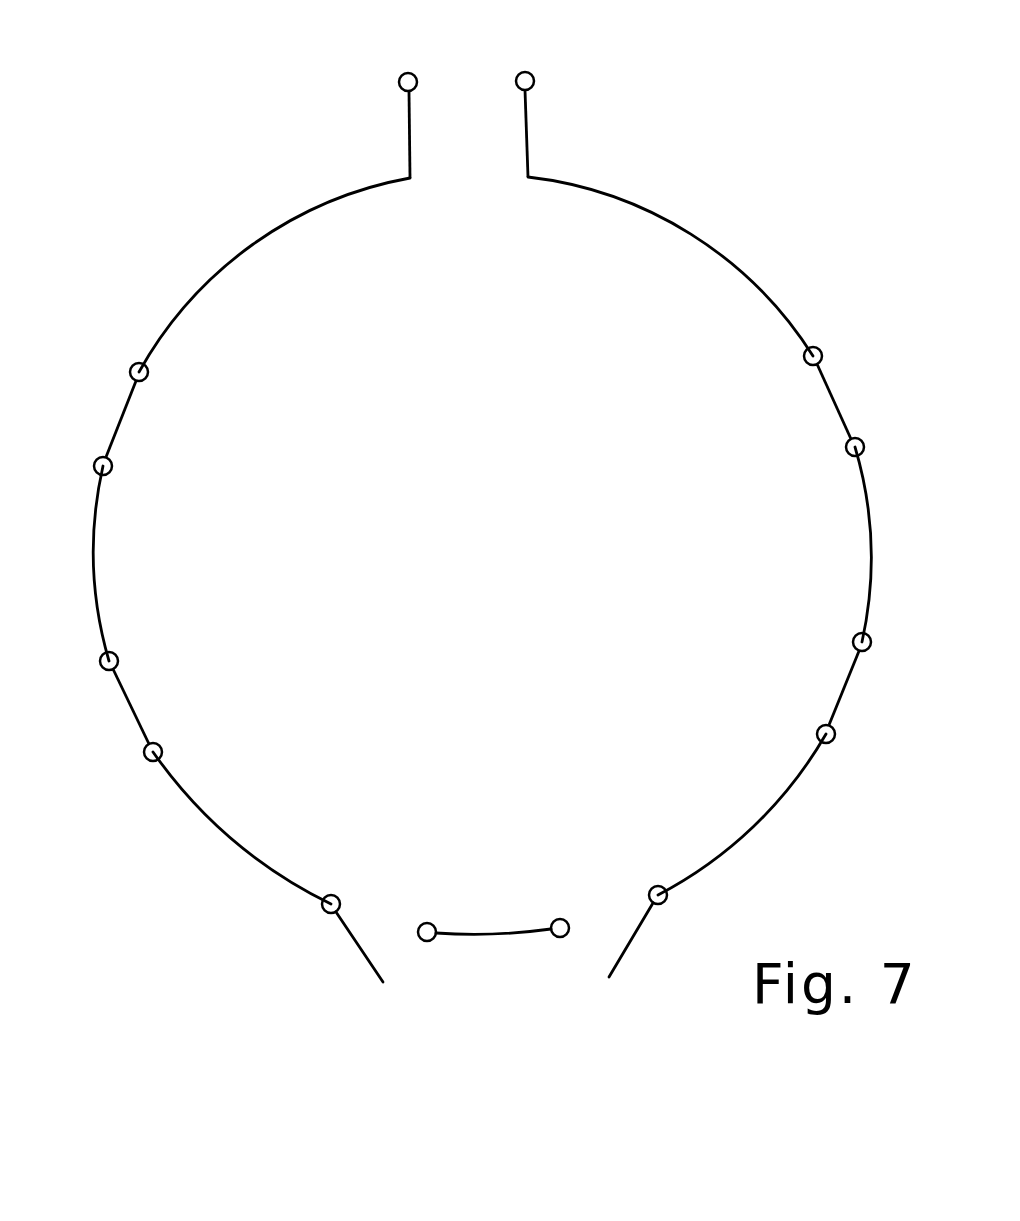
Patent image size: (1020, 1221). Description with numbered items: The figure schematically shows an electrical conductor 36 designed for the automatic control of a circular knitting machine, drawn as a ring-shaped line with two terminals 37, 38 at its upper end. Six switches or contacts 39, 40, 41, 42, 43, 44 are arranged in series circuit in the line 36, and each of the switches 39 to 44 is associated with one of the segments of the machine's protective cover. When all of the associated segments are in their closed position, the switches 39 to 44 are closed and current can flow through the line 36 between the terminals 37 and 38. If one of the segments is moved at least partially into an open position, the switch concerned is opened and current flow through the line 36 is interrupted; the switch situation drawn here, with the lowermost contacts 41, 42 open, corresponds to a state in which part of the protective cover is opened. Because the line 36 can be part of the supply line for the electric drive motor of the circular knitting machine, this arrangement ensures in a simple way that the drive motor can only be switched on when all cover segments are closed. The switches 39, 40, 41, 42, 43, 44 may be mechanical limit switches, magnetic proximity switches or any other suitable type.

The electrical conductor 36 is at (678, 223).
The terminal 37 is at (405, 74).
The terminal 38 is at (528, 73).
The switch 39 is at (835, 398).
The switch 40 is at (845, 688).
The switch 41 is at (607, 925).
The switch 42 is at (390, 930).
The switch 43 is at (130, 708).
The switch 44 is at (115, 422).